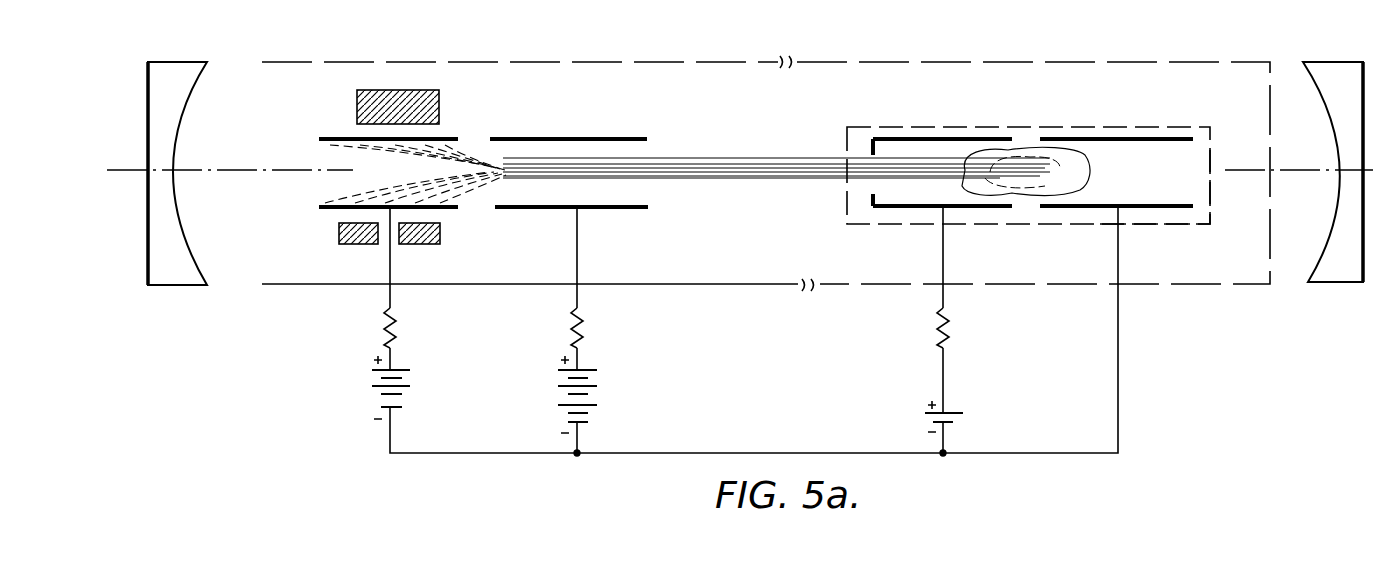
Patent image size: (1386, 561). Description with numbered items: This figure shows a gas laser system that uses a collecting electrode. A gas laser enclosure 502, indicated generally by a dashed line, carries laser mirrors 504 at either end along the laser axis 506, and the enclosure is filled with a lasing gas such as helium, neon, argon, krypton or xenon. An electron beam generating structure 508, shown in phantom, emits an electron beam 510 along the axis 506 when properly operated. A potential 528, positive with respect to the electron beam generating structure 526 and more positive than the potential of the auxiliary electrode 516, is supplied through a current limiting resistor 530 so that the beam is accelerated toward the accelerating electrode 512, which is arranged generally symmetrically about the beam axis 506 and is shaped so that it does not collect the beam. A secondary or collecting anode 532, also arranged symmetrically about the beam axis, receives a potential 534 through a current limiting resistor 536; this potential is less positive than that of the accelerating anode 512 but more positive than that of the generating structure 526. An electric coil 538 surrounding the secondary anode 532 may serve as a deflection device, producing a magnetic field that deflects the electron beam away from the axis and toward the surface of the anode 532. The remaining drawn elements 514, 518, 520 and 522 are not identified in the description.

The gas laser enclosure 502 is at (1177, 125).
The laser mirrors 504 is at (183, 67).
The laser axis 506 is at (135, 148).
The electron beam generating structure 508 is at (1213, 192).
The electron beam 510 is at (679, 178).
The accelerating electrode 512 is at (553, 137).
The collector electrode 514 is at (1092, 138).
The auxiliary electrode 516 is at (923, 138).
The battery 518 is at (958, 413).
The resistor 520 is at (952, 330).
The plasma region 522 is at (1080, 183).
The electron beam generating structure 526 is at (857, 193).
The potential 528 is at (597, 393).
The current limiting resistor 530 is at (584, 328).
The secondary or collecting anode 532 is at (327, 138).
The potential 534 is at (410, 393).
The current limiting resistor 536 is at (397, 328).
The electric coil 538 is at (438, 98).